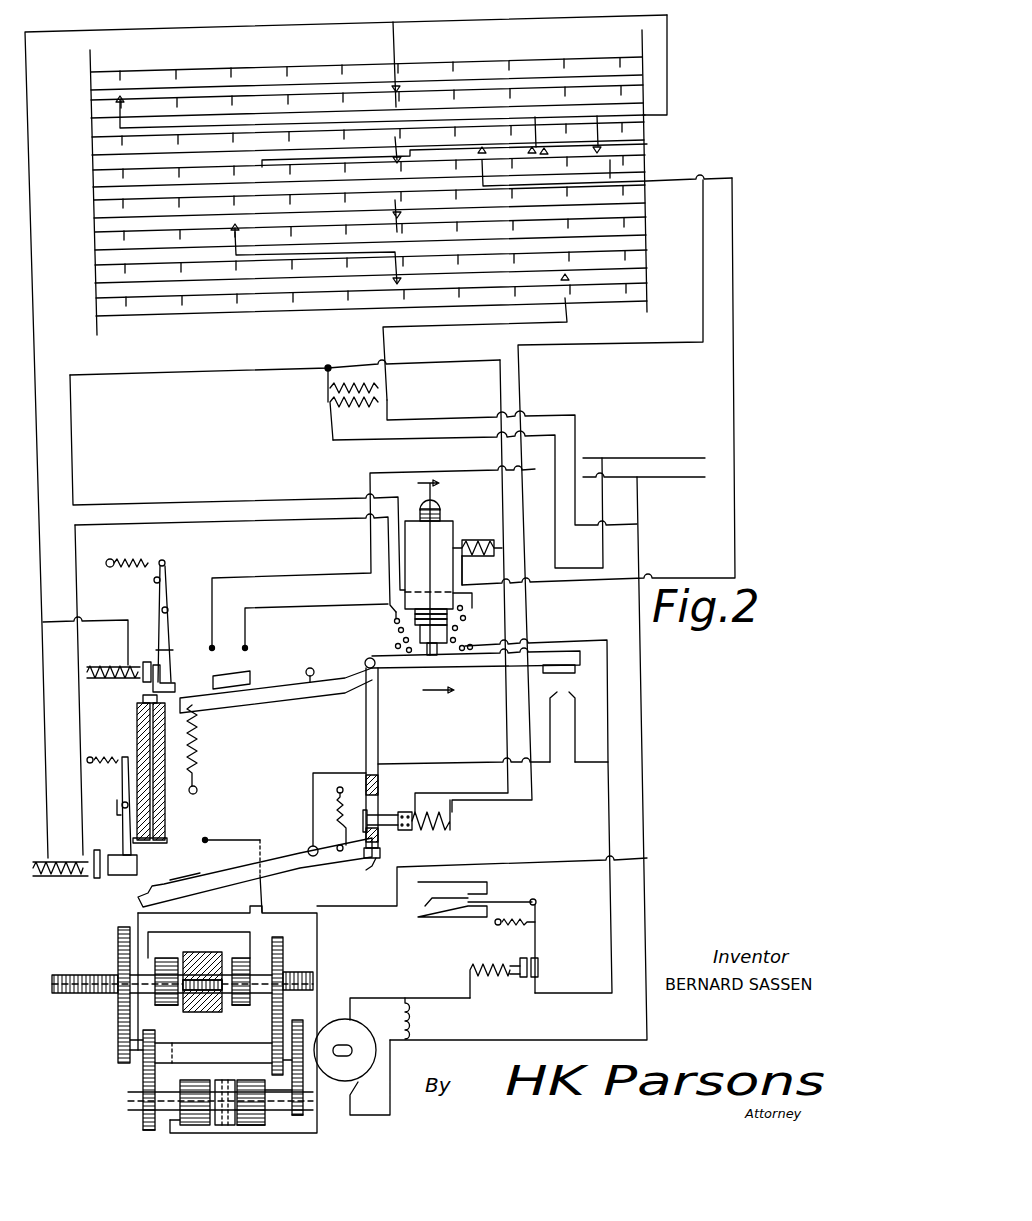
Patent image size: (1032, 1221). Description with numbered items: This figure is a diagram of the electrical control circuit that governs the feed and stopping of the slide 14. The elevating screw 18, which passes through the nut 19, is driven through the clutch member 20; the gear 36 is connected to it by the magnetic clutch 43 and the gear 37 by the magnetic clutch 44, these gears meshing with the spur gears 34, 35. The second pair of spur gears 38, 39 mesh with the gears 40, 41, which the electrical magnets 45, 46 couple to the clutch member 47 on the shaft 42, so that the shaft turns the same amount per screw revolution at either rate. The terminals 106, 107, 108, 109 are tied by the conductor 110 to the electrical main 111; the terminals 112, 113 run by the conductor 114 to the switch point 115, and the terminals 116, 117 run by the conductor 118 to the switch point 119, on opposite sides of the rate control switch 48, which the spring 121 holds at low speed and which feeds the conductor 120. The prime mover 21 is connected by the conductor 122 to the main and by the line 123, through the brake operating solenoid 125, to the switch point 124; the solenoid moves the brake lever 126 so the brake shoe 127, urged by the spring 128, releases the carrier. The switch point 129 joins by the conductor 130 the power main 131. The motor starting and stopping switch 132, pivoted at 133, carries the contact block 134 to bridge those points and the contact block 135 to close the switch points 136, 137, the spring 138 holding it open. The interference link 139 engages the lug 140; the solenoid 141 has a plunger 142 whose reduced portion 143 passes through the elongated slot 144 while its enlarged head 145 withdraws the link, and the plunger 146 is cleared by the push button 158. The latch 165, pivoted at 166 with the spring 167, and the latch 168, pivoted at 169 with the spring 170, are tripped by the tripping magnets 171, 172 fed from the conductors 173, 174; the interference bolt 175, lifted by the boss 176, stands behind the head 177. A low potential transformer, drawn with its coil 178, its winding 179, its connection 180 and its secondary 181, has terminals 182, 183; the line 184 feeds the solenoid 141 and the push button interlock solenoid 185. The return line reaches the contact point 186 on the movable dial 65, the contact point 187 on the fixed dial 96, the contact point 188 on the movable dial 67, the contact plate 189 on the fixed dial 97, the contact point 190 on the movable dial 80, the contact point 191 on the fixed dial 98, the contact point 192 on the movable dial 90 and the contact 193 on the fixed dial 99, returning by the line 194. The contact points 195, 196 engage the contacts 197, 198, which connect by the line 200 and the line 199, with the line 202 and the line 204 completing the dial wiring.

The slide 14 is at (480, 889).
The elevating screw 18 is at (72, 994).
The nut 19 is at (446, 586).
The clutch member 20 is at (202, 952).
The prime mover 21 is at (360, 1022).
The spur gear 34 is at (117, 1060).
The spur gear 35 is at (284, 1020).
The spur gear 36 is at (116, 940).
The spur gear 37 is at (283, 940).
The spur gear 38 is at (141, 1078).
The spur gear 39 is at (306, 1020).
The spur gear 40 is at (141, 1128).
The spur gear 41 is at (295, 1118).
The shaft 42 is at (128, 1098).
The magnetic clutch 43 is at (182, 940).
The magnetic clutch 44 is at (227, 1019).
The electrical magnet 45 is at (206, 1082).
The electrical magnet 46 is at (242, 1086).
The clutch member 47 is at (220, 1080).
The rate control switch 48 is at (283, 851).
The movable dial 65 is at (90, 82).
The movable dial 67 is at (92, 145).
The movable dial 80 is at (94, 210).
The movable dial 90 is at (95, 273).
The fixed dial 96 is at (91, 110).
The fixed dial 97 is at (93, 179).
The fixed dial 98 is at (95, 241).
The fixed dial 99 is at (96, 307).
The terminal 106 is at (152, 936).
The terminal 107 is at (240, 956).
The terminal 108 is at (173, 1124).
The terminal 109 is at (268, 1128).
The conductor 110 is at (372, 906).
The electrical main 111 is at (672, 481).
The terminal 112 is at (170, 1008).
The terminal 113 is at (174, 1064).
The conductor 114 is at (136, 916).
The switch point 115 is at (211, 888).
The terminal 116 is at (246, 1008).
The terminal 117 is at (268, 1092).
The conductor 118 is at (263, 880).
The switch point 119 is at (205, 842).
The conductor 120 is at (424, 764).
The spring 121 is at (335, 820).
The conductor 122 is at (522, 1040).
The line 123 is at (444, 998).
The switch point 124 is at (248, 644).
The brake operating solenoid 125 is at (492, 968).
The brake lever 126 is at (540, 957).
The brake shoe 127 is at (537, 902).
The spring 128 is at (503, 928).
The switch point 129 is at (210, 646).
The conductor 130 is at (282, 579).
The power main 131 is at (660, 456).
The motor starting and stopping switch 132 is at (372, 660).
The pivot 133 is at (310, 668).
The contact block 134 is at (242, 678).
The contact block 135 is at (562, 676).
The switch point 136 is at (586, 727).
The switch point 137 is at (542, 727).
The spring 138 is at (198, 768).
The interference link 139 is at (379, 690).
The lug 140 is at (372, 864).
The solenoid 141 is at (430, 836).
The plunger 142 is at (370, 814).
The reduced portion 143 is at (380, 836).
The elongated slot 144 is at (380, 790).
The enlarged head 145 is at (363, 806).
The plunger 146 is at (445, 652).
The push button 158 is at (441, 505).
The latch 165 is at (160, 650).
The pivot 166 is at (170, 603).
The spring 167 is at (148, 562).
The latch 168 is at (123, 876).
The pivot 169 is at (120, 806).
The spring 170 is at (118, 757).
The tripping magnet 171 is at (122, 652).
The tripping magnet 172 is at (66, 876).
The conductor 173 is at (81, 592).
The conductor 174 is at (236, 26).
The interference bolt 175 is at (166, 806).
The boss 176 is at (140, 700).
The head 177 is at (173, 677).
The relay coil 178 is at (330, 408).
The conductor 179 is at (428, 418).
The conductor 180 is at (410, 440).
The conductor 181 is at (360, 367).
The terminal 182 is at (326, 366).
The terminal 183 is at (386, 386).
The line 184 is at (502, 458).
The push button interlock solenoid 185 is at (492, 526).
The contact point 186 is at (392, 89).
The contact point 187 is at (126, 99).
The contact point 188 is at (401, 141).
The contact plate 189 is at (409, 157).
The contact point 190 is at (403, 213).
The contact point 191 is at (240, 226).
The contact point 192 is at (403, 281).
The contact 193 is at (571, 277).
The line 194 is at (570, 319).
The contact point 195 is at (530, 152).
The contact point 196 is at (602, 150).
The contact 197 is at (478, 151).
The contact 198 is at (549, 151).
The line 199 is at (702, 316).
The line 200 is at (737, 355).
The line 202 is at (668, 65).
The line 204 is at (490, 100).